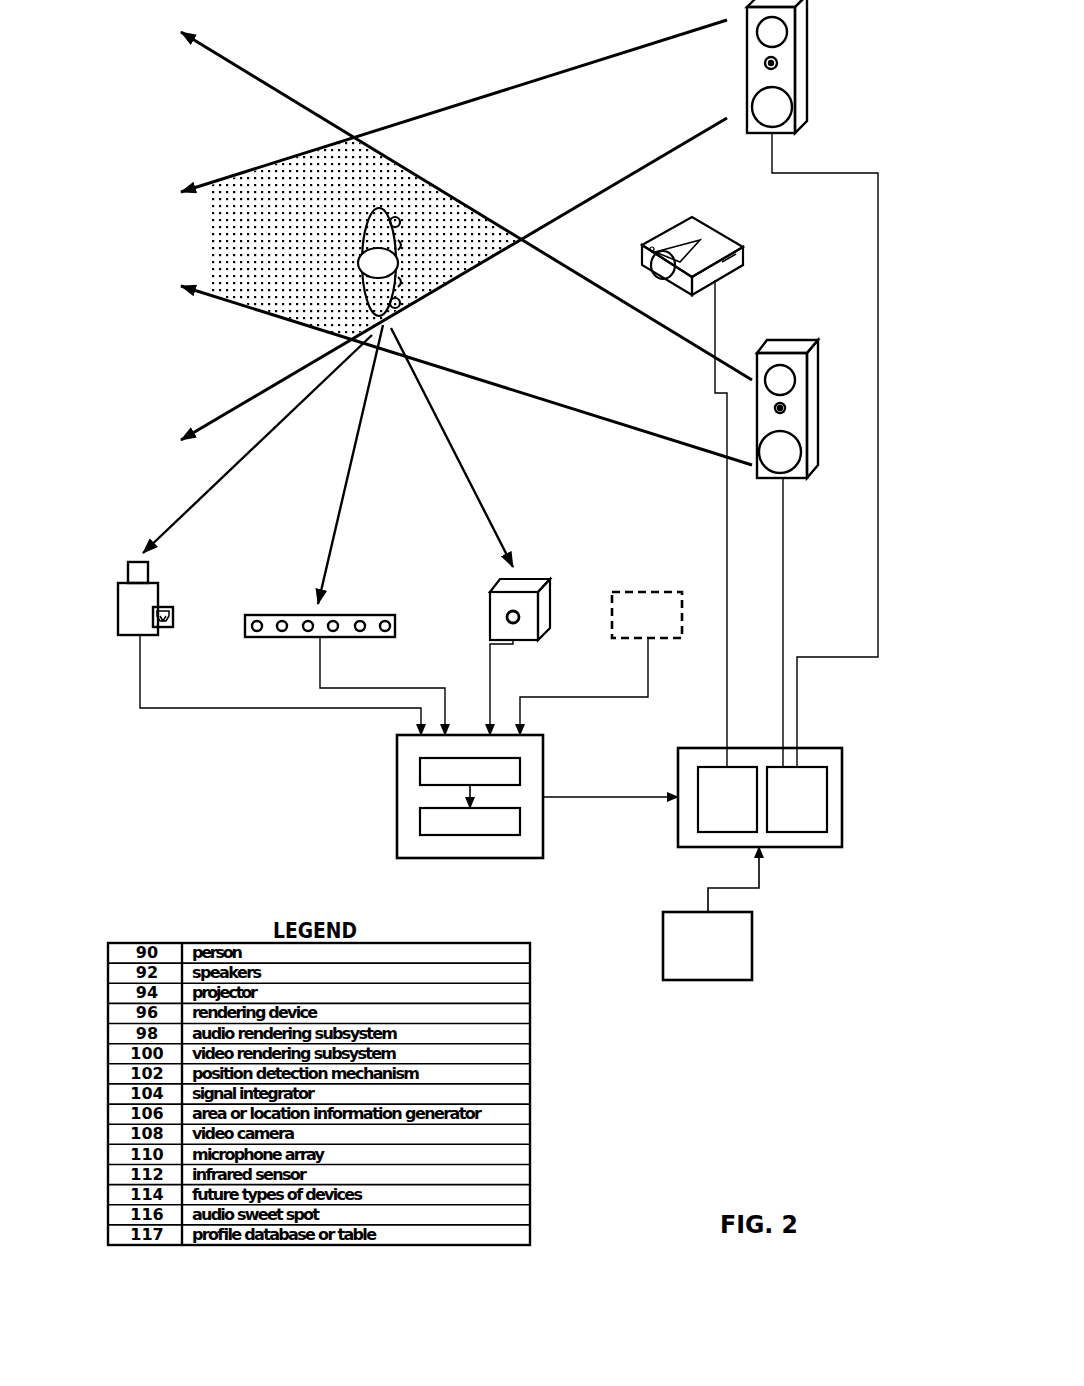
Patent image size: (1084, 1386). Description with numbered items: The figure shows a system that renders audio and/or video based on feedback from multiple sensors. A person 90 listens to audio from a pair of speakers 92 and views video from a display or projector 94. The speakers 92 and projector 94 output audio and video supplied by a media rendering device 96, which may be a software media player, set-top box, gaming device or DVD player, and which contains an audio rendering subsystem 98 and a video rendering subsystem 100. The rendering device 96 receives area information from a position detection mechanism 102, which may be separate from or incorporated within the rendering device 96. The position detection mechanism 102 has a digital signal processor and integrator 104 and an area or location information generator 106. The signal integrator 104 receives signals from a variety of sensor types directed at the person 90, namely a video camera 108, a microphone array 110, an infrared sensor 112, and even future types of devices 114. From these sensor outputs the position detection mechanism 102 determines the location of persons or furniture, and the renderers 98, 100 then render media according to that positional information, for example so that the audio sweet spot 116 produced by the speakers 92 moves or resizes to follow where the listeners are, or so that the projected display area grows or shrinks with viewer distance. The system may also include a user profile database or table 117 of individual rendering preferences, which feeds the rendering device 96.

The person 90 is at (407, 296).
The speakers 92 is at (847, 23).
The projector 94 is at (779, 266).
The media rendering device 96 is at (760, 814).
The audio rendering subsystem 98 is at (805, 809).
The video rendering subsystem 100 is at (746, 809).
The position detection mechanism 102 is at (514, 798).
The signal integrator 104 is at (484, 783).
The area or location information generator 106 is at (484, 833).
The video camera 108 is at (193, 661).
The microphone array 110 is at (400, 661).
The infrared sensor 112 is at (563, 673).
The future types of devices 114 is at (712, 663).
The audio sweet spot 116 is at (258, 290).
The profile database or table 117 is at (721, 956).